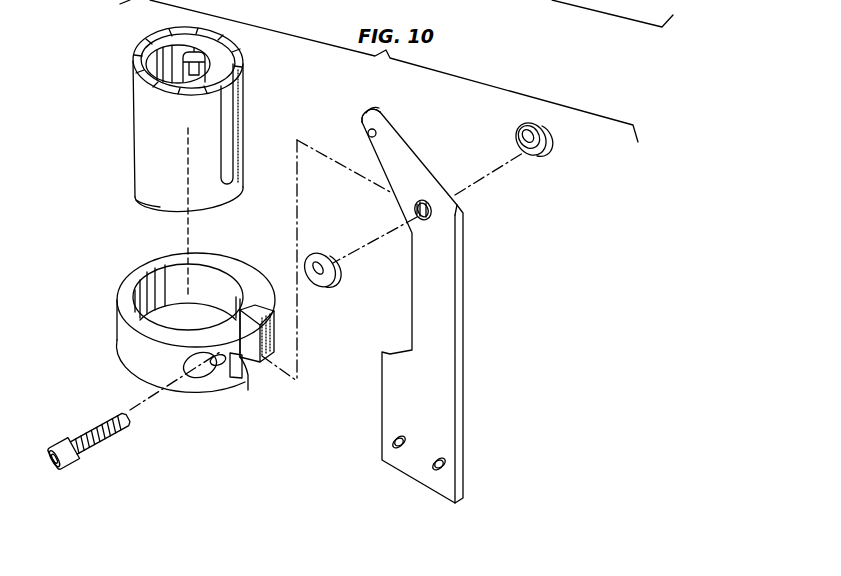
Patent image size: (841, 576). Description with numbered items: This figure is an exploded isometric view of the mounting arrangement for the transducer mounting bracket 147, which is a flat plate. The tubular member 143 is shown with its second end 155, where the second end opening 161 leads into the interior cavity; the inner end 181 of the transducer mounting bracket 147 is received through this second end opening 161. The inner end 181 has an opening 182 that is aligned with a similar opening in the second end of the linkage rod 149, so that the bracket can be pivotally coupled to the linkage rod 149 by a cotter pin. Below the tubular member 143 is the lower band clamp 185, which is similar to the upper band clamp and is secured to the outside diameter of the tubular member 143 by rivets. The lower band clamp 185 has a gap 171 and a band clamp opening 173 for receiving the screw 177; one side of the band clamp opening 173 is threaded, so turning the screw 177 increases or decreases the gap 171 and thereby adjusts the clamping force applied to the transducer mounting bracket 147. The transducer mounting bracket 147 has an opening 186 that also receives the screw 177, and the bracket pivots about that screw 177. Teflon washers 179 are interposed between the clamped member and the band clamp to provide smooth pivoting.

The tubular member 143 is at (140, 100).
The linkage rod 149 is at (187, 63).
The second end opening 161 is at (238, 108).
The second end 155 is at (147, 207).
The lower band clamp 185 is at (123, 282).
The gap 171 is at (265, 360).
The band clamp opening 173 is at (220, 377).
The screw 177 is at (102, 413).
The transducer mounting bracket 147 is at (462, 343).
The inner end 181 is at (380, 115).
The opening 182 is at (378, 133).
The opening 186 is at (432, 218).
The washers 179 is at (552, 162).